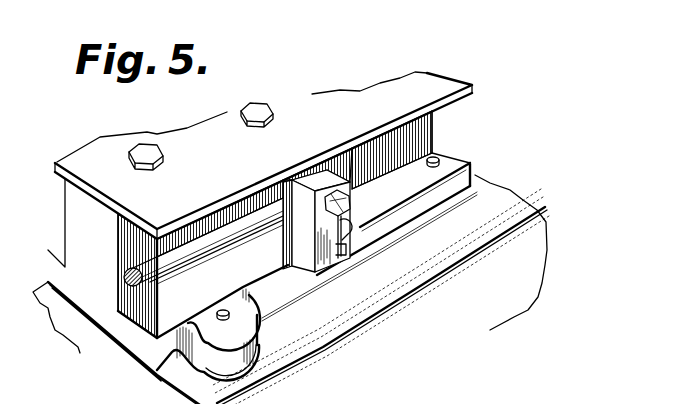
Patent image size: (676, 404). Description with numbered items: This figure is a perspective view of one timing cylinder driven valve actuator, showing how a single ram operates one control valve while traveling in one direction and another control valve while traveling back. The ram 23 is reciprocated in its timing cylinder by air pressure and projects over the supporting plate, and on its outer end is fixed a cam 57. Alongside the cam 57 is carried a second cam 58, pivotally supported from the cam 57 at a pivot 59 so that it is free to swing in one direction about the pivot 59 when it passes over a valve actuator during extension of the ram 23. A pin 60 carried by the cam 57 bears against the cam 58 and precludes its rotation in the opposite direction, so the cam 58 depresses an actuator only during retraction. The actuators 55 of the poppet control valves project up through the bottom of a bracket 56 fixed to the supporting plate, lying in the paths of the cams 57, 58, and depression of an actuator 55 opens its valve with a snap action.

The bracket 56 is at (333, 112).
The cam 57 is at (272, 197).
The ram 23 is at (175, 263).
The actuator 55 is at (438, 160).
The pivot 59 is at (343, 202).
The pin 60 is at (350, 227).
The cam 58 is at (329, 257).